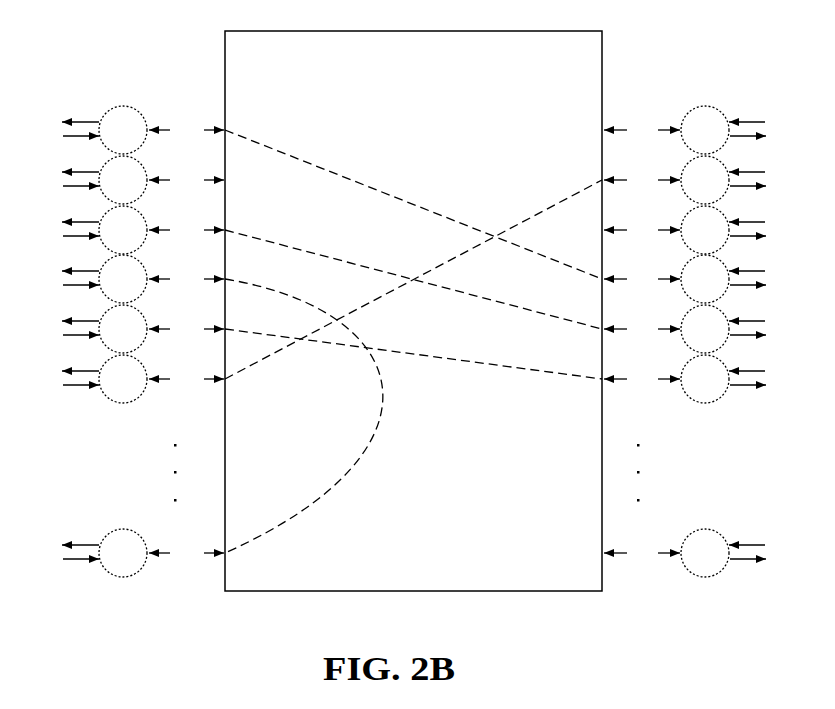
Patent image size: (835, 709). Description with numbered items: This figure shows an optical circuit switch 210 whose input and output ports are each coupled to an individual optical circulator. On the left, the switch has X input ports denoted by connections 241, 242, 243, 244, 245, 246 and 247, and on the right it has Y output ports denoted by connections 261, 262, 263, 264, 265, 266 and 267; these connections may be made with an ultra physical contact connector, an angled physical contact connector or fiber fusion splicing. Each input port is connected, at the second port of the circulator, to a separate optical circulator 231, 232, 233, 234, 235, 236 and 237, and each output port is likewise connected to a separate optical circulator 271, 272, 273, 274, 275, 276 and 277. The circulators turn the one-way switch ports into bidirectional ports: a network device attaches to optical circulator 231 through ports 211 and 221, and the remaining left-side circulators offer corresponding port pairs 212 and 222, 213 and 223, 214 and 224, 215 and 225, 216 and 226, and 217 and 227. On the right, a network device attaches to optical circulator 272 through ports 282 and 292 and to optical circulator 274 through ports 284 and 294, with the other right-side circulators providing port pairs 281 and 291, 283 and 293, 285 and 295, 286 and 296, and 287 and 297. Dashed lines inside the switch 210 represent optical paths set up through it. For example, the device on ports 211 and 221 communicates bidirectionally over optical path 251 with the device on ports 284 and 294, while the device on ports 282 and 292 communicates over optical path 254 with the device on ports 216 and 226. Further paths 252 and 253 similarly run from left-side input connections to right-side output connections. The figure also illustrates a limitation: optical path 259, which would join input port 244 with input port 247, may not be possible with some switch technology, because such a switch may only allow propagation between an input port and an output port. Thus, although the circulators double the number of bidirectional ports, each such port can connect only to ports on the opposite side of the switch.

The optical circuit switch 210 is at (413, 311).
The port 211 is at (67, 121).
The input optical signal 212 is at (67, 171).
The input optical signal 213 is at (67, 221).
The input optical signal 214 is at (67, 270).
The input optical signal 215 is at (67, 320).
The port 216 is at (67, 370).
The input optical signal 217 is at (67, 544).
The port 221 is at (67, 137).
The output optical signal 222 is at (67, 187).
The output optical signal 223 is at (67, 237).
The output optical signal 224 is at (67, 286).
The output optical signal 225 is at (67, 336).
The port 226 is at (67, 386).
The output optical signal 227 is at (67, 560).
The optical circulator 231 is at (123, 130).
The optical circulator 232 is at (123, 180).
The optical circulator 233 is at (123, 230).
The optical circulator 234 is at (123, 279).
The optical circulator 235 is at (123, 329).
The optical circulator 236 is at (123, 379).
The optical circulator 237 is at (123, 553).
The connection 241 is at (186, 130).
The connection 242 is at (186, 180).
The connection 243 is at (186, 230).
The input port 244 is at (186, 279).
The connection 245 is at (186, 329).
The connection 246 is at (186, 379).
The input port 247 is at (186, 553).
The optical path 251 is at (315, 160).
The optical path 252 is at (290, 246).
The optical path 253 is at (284, 336).
The optical path 254 is at (270, 357).
The optical path 259 is at (368, 445).
The connection 261 is at (642, 130).
The connection 262 is at (642, 180).
The connection 263 is at (642, 230).
The connection 264 is at (642, 279).
The connection 265 is at (642, 329).
The connection 266 is at (642, 379).
The connection 267 is at (642, 553).
The optical circulator 271 is at (705, 130).
The optical circulator 272 is at (705, 180).
The optical circulator 273 is at (705, 230).
The optical circulator 274 is at (705, 279).
The optical circulator 275 is at (705, 329).
The optical circulator 276 is at (705, 379).
The optical circulator 277 is at (705, 553).
The input optical signal 281 is at (761, 121).
The port 282 is at (761, 171).
The input optical signal 283 is at (761, 221).
The port 284 is at (761, 270).
The input optical signal 285 is at (761, 320).
The input optical signal 286 is at (761, 370).
The input optical signal 287 is at (761, 544).
The output optical signal 291 is at (762, 137).
The port 292 is at (762, 187).
The output optical signal 293 is at (762, 237).
The port 294 is at (762, 286).
The output optical signal 295 is at (762, 336).
The output optical signal 296 is at (762, 386).
The output optical signal 297 is at (762, 560).